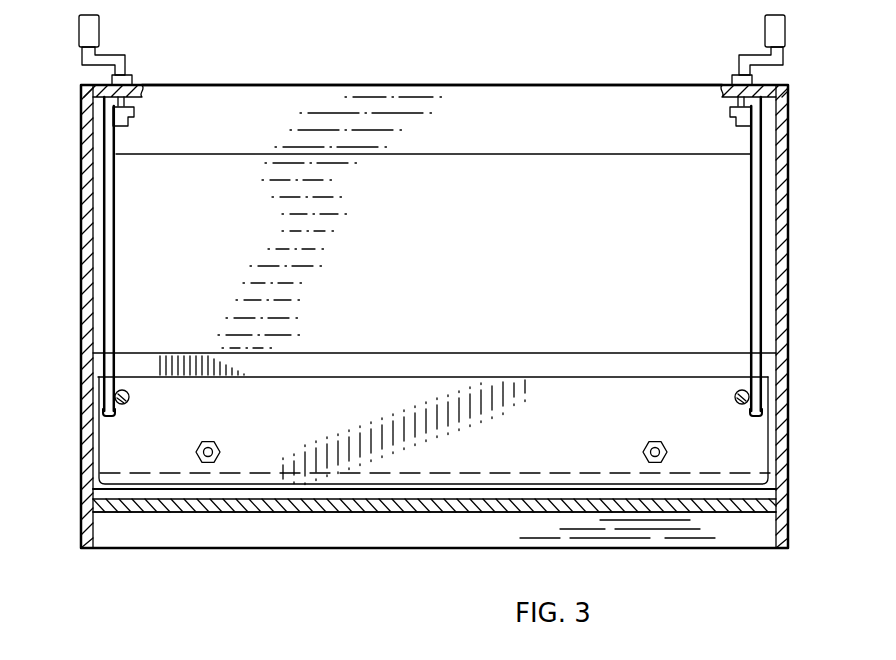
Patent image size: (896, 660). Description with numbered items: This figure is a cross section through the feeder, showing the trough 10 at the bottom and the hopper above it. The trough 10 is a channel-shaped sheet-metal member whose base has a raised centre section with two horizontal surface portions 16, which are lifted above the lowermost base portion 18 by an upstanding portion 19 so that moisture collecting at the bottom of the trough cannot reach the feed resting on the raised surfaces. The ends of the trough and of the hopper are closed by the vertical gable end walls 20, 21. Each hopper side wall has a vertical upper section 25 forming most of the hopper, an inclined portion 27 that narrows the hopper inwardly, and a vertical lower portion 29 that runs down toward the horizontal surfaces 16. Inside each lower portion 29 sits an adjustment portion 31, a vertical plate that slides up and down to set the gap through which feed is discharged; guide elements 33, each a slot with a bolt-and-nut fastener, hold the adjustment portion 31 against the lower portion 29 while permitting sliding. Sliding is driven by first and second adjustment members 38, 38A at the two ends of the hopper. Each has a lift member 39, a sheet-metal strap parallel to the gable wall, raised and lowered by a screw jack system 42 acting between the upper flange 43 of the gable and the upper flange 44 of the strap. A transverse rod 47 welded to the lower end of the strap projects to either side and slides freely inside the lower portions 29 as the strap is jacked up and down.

The trough 10 is at (181, 547).
The horizontal surface portions 16 is at (415, 512).
The lowermost base portion 18 is at (283, 548).
The upstanding portion 19 is at (345, 530).
The end wall 20 is at (80, 368).
The end wall 21 is at (790, 452).
The vertical upper section 25 is at (482, 112).
The inclined portion 27 is at (527, 185).
The vertical lower portion 29 is at (570, 365).
The adjustment portion 31 is at (340, 385).
The guide element 33 is at (221, 446).
The first adjustment member 38 is at (150, 216).
The second adjustment member 38A is at (737, 236).
The lift member 39 is at (116, 213).
The screw jack system 42 is at (112, 53).
The upper flange 43 is at (140, 90).
The upper flange 44 is at (136, 112).
The transverse rod 47 is at (131, 396).